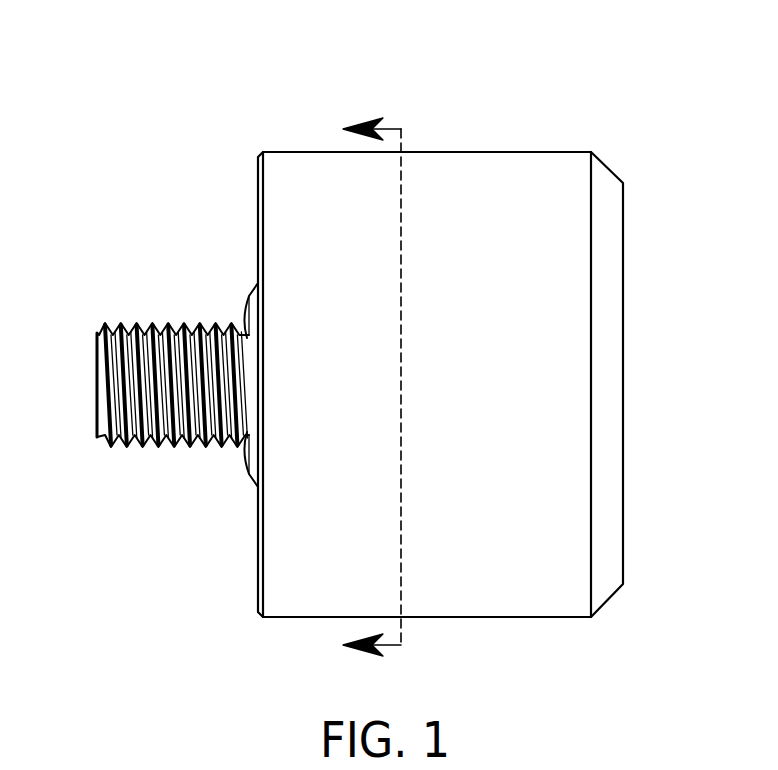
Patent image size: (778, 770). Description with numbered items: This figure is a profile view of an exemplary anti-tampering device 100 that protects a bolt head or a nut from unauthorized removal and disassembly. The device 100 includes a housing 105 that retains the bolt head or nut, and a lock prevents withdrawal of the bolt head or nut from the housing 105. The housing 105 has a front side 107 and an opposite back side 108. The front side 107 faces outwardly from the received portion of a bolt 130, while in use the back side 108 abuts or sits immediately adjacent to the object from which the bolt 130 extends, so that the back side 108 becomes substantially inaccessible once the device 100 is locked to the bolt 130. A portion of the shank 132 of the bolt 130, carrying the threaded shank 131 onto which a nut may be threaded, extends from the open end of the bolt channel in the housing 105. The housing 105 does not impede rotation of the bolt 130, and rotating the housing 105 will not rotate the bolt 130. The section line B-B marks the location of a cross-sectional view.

The anti-tampering device 100 is at (383, 354).
The housing 105 is at (438, 132).
The front side 107 is at (623, 372).
The back side 108 is at (255, 548).
The bolt 130 is at (142, 355).
The threaded shank 131 is at (152, 443).
The shank 132 is at (95, 382).